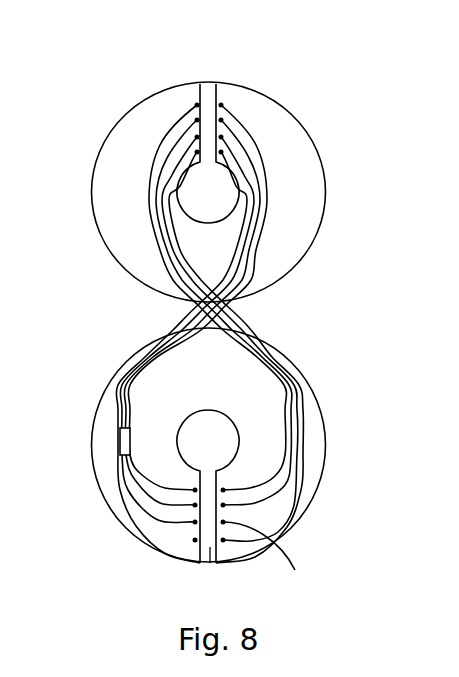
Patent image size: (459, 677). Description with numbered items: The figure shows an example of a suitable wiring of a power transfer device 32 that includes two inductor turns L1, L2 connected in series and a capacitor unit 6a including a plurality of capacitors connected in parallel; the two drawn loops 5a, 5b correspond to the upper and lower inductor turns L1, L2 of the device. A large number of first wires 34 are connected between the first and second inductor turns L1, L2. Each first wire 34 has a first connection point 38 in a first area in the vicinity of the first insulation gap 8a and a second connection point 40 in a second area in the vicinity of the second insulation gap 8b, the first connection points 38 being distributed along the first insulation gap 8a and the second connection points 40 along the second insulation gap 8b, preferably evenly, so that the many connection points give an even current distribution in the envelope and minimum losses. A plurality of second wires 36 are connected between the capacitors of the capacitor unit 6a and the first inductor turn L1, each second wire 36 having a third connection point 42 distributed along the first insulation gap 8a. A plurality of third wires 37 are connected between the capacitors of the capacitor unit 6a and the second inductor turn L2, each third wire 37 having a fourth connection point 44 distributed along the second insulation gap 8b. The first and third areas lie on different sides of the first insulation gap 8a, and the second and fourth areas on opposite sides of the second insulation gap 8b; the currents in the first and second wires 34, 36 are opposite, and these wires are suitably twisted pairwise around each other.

The power transfer device 32 is at (371, 176).
The first loop 5a is at (317, 126).
The second loop 5b is at (320, 380).
The first inductor turn L1 is at (300, 217).
The second inductor turn L2 is at (310, 440).
The first insulation gap 8a is at (211, 113).
The second insulation gap 8b is at (200, 564).
The first wires 34 is at (186, 115).
The first connection point 38 is at (196, 106).
The third connection point 42 is at (222, 107).
The second wires 36 is at (187, 317).
The capacitor unit 6a is at (125, 443).
The third wires 37 is at (138, 507).
The fourth connection point 44 is at (195, 540).
The second connection point 40 is at (267, 548).